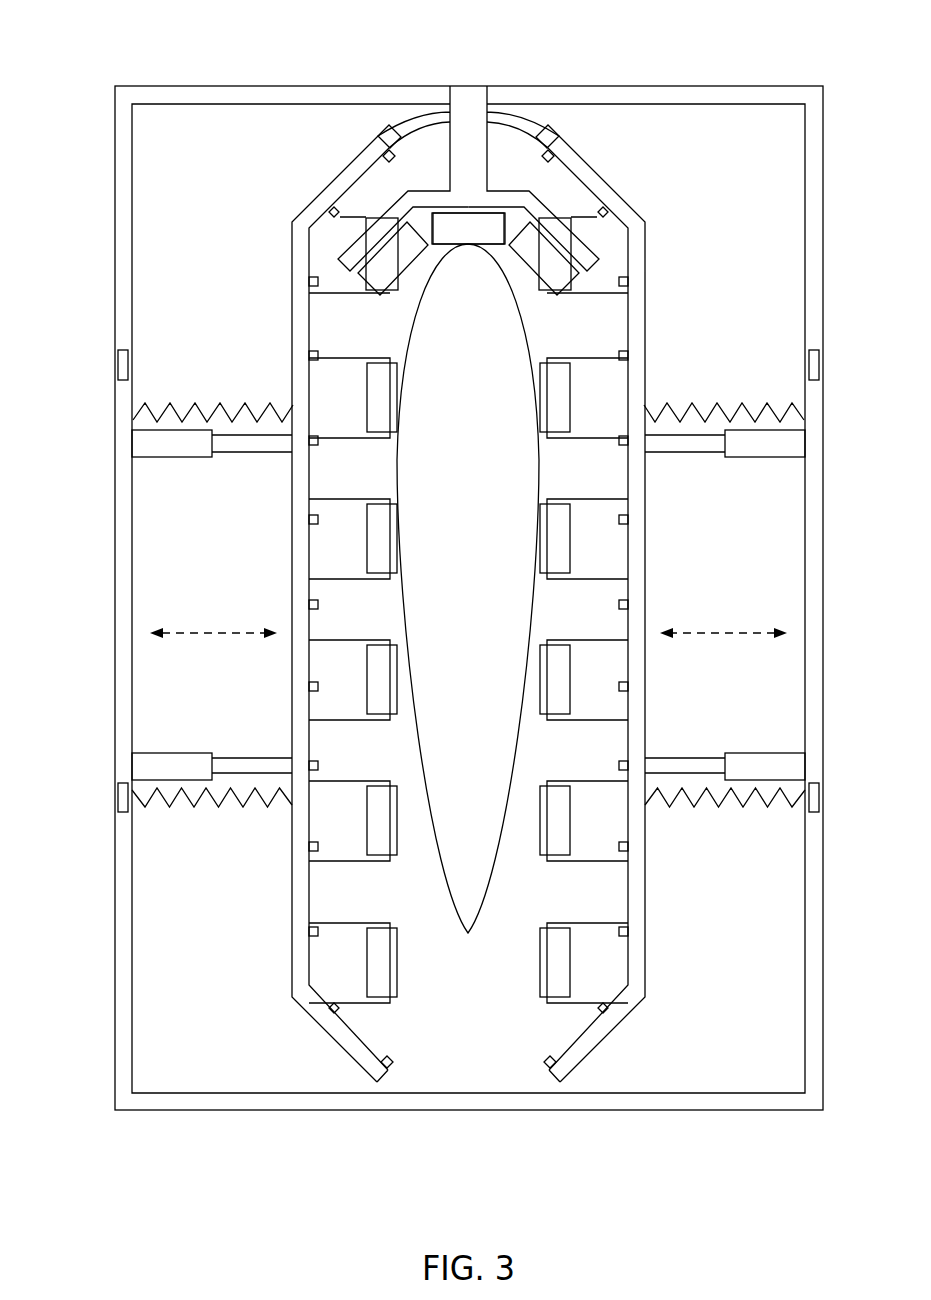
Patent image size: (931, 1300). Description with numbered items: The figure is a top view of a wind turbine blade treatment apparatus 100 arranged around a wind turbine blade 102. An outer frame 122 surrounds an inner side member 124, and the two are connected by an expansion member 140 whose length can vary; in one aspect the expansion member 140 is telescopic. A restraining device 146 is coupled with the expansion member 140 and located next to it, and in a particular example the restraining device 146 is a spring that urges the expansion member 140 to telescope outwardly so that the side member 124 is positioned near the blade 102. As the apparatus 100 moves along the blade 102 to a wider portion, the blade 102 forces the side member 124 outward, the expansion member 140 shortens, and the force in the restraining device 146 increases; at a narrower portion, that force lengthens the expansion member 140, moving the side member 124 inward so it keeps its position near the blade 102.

The wind turbine blade treatment apparatus 100 is at (141, 46).
The wind turbine blade 102 is at (497, 859).
The frame 122 is at (132, 190).
The side member 124 is at (291, 280).
The expansion member 140 is at (210, 458).
The restraining device 146 is at (198, 402).